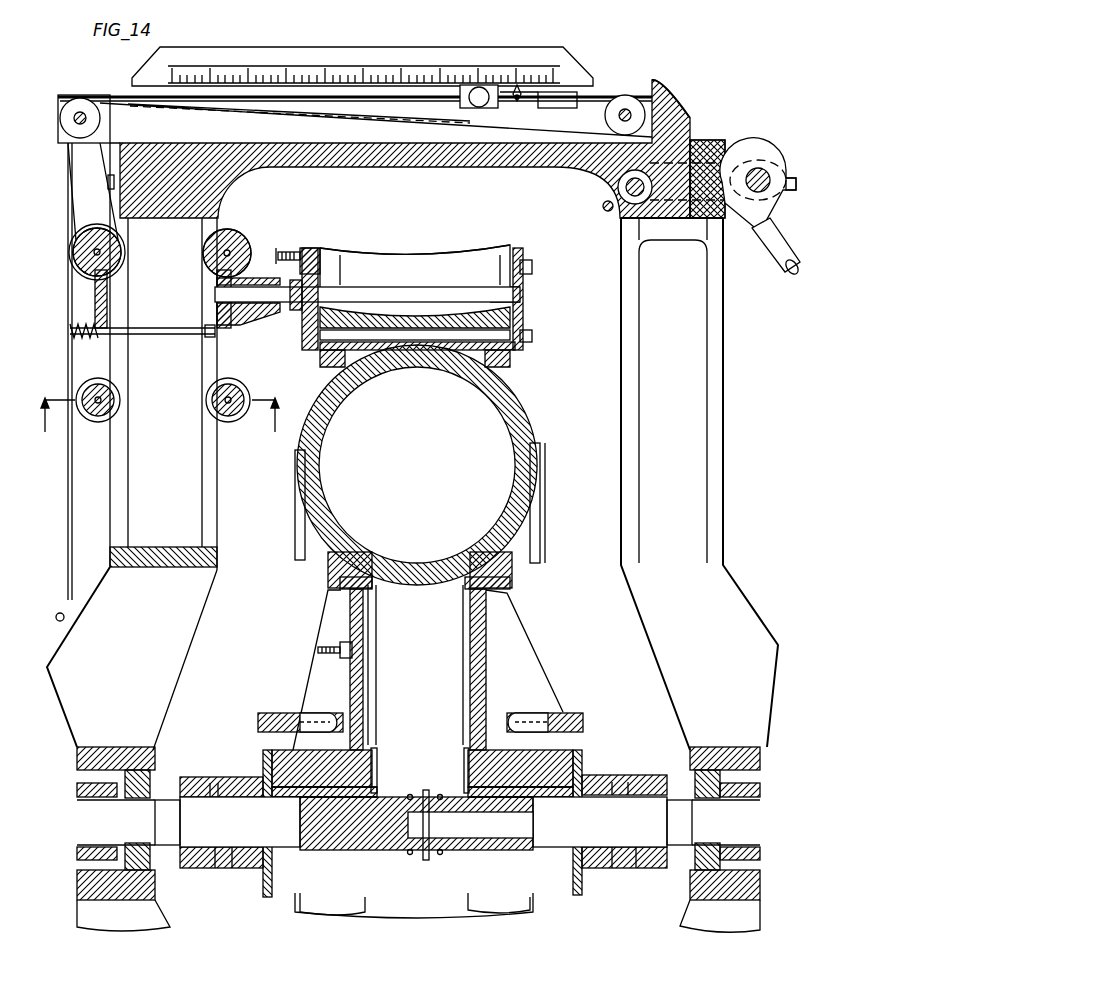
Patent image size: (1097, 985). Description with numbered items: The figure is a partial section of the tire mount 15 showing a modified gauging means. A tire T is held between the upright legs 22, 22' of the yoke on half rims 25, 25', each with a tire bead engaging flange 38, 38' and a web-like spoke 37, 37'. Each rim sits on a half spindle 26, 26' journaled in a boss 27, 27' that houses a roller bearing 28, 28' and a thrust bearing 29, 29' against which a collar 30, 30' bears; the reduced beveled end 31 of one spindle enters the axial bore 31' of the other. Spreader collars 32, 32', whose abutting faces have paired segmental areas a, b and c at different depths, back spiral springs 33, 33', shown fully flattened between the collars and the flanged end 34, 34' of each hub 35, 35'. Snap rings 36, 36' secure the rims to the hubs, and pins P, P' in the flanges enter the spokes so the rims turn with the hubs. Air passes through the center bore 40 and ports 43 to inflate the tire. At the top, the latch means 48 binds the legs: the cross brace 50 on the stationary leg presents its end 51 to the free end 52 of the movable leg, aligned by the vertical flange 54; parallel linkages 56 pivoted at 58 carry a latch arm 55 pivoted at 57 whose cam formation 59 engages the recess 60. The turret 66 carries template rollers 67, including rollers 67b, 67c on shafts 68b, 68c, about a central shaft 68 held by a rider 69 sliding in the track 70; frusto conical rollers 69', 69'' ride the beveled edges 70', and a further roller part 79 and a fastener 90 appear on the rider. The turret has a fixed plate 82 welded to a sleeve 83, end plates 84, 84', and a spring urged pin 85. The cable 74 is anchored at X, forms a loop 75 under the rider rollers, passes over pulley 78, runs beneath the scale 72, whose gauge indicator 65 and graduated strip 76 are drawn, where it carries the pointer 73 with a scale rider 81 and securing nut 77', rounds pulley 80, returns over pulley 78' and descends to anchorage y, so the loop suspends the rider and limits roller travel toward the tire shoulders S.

The upright leg 22 is at (699, 484).
The upright leg 22' is at (236, 394).
The half rim 25 is at (462, 663).
The half rim 25' is at (376, 655).
The half spindle 26 is at (600, 822).
The half spindle 26' is at (240, 822).
The boss 27 is at (739, 839).
The boss 27' is at (123, 822).
The roller bearing 28 is at (758, 813).
The roller bearing 28' is at (76, 803).
The thrust bearing 29 is at (709, 792).
The thrust bearing 29' is at (138, 792).
The collar 30 is at (713, 822).
The collar 30' is at (128, 822).
The reduced beveled end 31 is at (399, 776).
The axial bore 31' is at (398, 860).
The spreader collar 32 is at (624, 798).
The spreader collar 32' is at (221, 797).
The spiral spring 33 is at (543, 811).
The spiral spring 33' is at (296, 800).
The flanged end 34 is at (562, 711).
The flanged end 34' is at (294, 702).
The hub 35 is at (480, 891).
The hub 35' is at (353, 893).
The snap ring 36 is at (449, 749).
The snap ring 36' is at (388, 749).
The web-like spoke 37 is at (531, 651).
The web-like spoke 37' is at (299, 670).
The tire bead engaging flange 38 is at (520, 566).
The tire bead engaging flange 38' is at (317, 570).
The center bore 40 is at (489, 832).
The ports 43 is at (425, 790).
The latch means 48 is at (760, 136).
The bridge piece or cross brace 50 is at (302, 165).
The end of cross brace 51 is at (618, 182).
The free end 52 is at (728, 240).
The vertical flange 54 is at (700, 145).
The latch arm 55 is at (785, 270).
The parallel linkages 56 is at (693, 215).
The pivot 57 is at (783, 192).
The pivotal connection 58 is at (618, 214).
The cam formation 59 is at (668, 218).
The recess 60 is at (758, 168).
The scale pointer 65 is at (378, 44).
The turret 66 is at (316, 250).
The roller 67 is at (432, 250).
The template roller 67b is at (328, 365).
The template roller 67c is at (380, 256).
The shaft 68 is at (405, 292).
The shaft 68b is at (505, 370).
The shaft 68c is at (533, 270).
The rider 69 is at (150, 304).
The frusto conical rollers 69' is at (235, 415).
The frusto conical rollers 69'' is at (175, 319).
The track 70 is at (165, 382).
The beveled edges 70' is at (167, 392).
The scale 72 is at (407, 55).
The pointer 73 is at (525, 100).
The cable 74 is at (415, 125).
The loop 75 is at (82, 230).
The slide block 76 is at (567, 102).
The securing nut 77' is at (512, 139).
The pulley 78 is at (62, 120).
The pulley 78' is at (66, 113).
The pulley ring 79 is at (70, 252).
The pulley 80 is at (632, 100).
The rider 81 is at (472, 108).
The fixed plate 82 is at (300, 325).
The sleeve 83 is at (285, 312).
The end plate 84 is at (398, 311).
The end plate 84' is at (545, 347).
The spring urged pin 85 is at (283, 250).
The screw 90 is at (334, 648).
The pin P is at (538, 710).
The pin P' is at (318, 702).
The shoulders S is at (528, 393).
The tire T is at (542, 440).
The anchorage X is at (108, 182).
The segmental area a is at (636, 868).
The segmental area b is at (628, 782).
The segmental area c is at (612, 867).
The anchorage y is at (58, 614).
The tire mount 15 is at (163, 427).